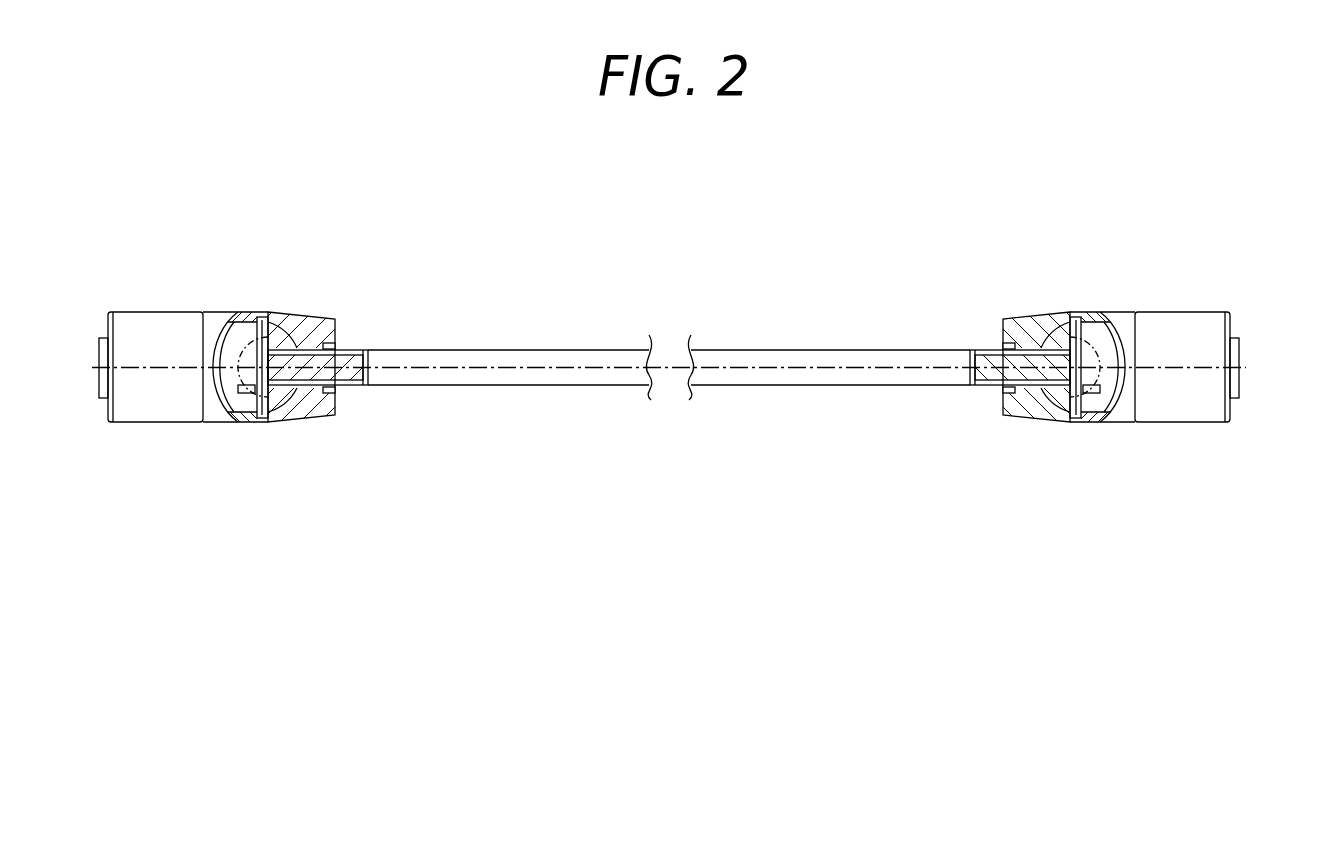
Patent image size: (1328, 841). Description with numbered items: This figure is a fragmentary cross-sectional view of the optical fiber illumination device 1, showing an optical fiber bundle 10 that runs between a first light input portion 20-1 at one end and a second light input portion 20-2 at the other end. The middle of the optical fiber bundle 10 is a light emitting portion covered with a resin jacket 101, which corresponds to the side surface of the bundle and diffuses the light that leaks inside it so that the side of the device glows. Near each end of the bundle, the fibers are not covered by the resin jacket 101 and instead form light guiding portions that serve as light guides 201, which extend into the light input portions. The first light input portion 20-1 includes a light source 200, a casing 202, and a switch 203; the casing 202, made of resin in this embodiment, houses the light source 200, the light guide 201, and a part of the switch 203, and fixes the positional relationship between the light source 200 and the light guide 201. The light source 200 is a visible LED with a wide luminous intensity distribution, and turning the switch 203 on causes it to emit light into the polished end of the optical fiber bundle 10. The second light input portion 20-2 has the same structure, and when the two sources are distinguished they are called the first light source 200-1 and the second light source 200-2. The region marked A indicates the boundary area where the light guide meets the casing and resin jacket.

The optical fiber illumination device 1 is at (669, 361).
The optical fiber bundle 10 is at (669, 333).
The resin jacket 101 is at (542, 348).
The first light input portion 20-1 is at (163, 427).
The second light input portion 20-2 is at (1101, 428).
The light source 200 is at (662, 407).
The first light source 200-1 is at (280, 407).
The second light source 200-2 is at (1045, 403).
The light guide 201 is at (314, 350).
The casing 202 is at (278, 310).
The switch 203 is at (99, 352).
The region A is at (320, 425).